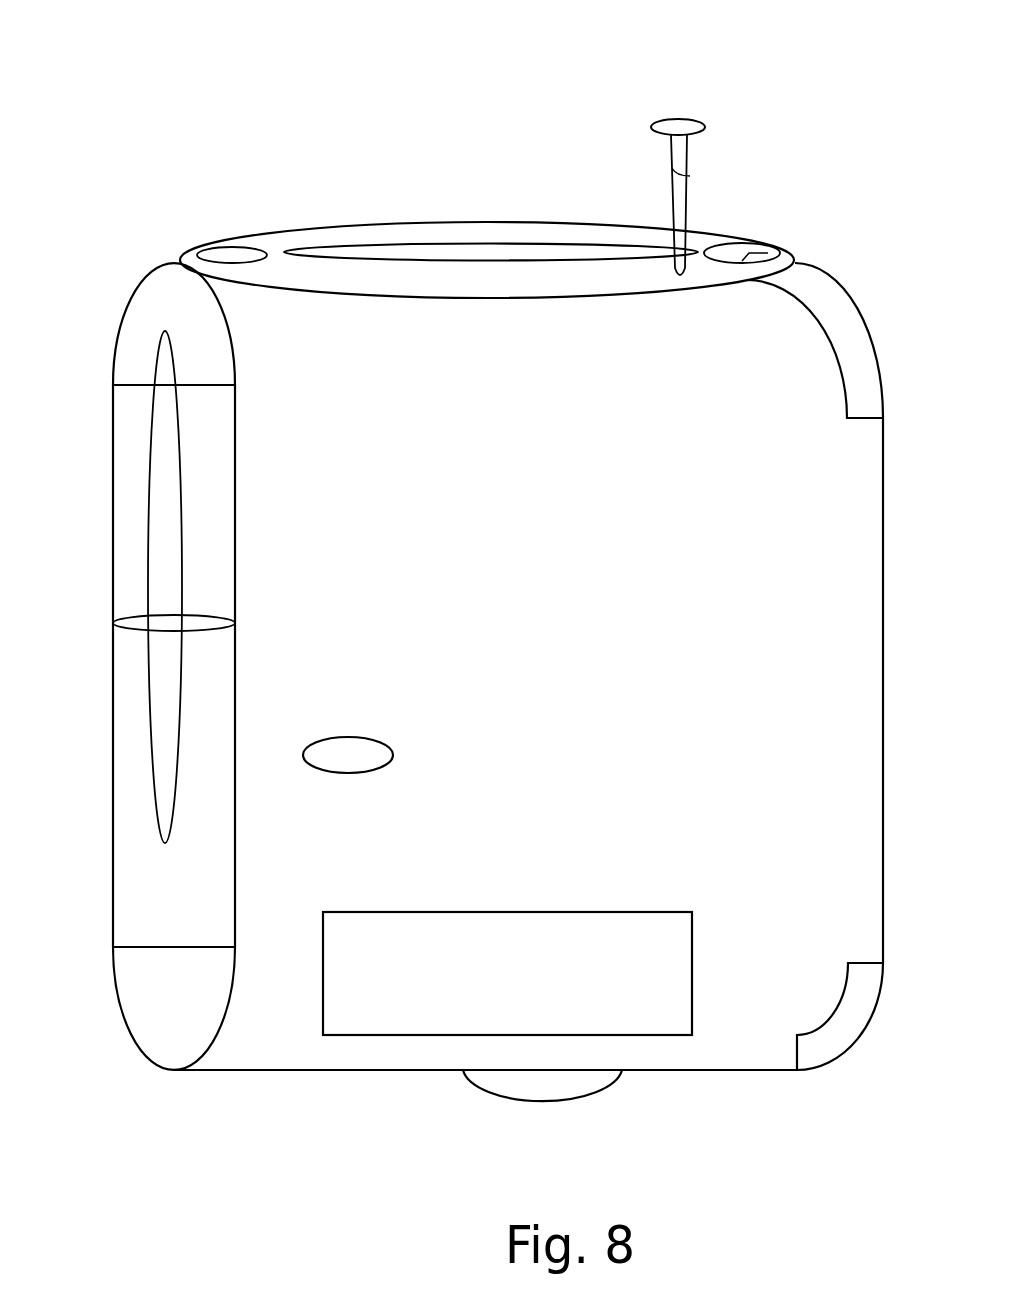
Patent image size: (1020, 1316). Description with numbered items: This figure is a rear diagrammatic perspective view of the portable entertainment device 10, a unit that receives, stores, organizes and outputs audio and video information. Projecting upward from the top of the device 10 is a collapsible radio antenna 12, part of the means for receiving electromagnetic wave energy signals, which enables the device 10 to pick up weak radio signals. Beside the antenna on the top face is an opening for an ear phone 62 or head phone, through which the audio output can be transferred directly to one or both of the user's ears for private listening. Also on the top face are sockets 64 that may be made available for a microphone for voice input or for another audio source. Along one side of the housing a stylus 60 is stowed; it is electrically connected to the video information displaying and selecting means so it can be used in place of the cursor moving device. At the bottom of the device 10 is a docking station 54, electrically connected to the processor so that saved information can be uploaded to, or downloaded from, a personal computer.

The portable entertainment device 10 is at (547, 173).
The collapsible radio antenna 12 is at (690, 176).
The docking station 54 is at (505, 1087).
The stylus 60 is at (163, 473).
The ear phone 62 is at (790, 252).
The sockets 64 is at (172, 250).